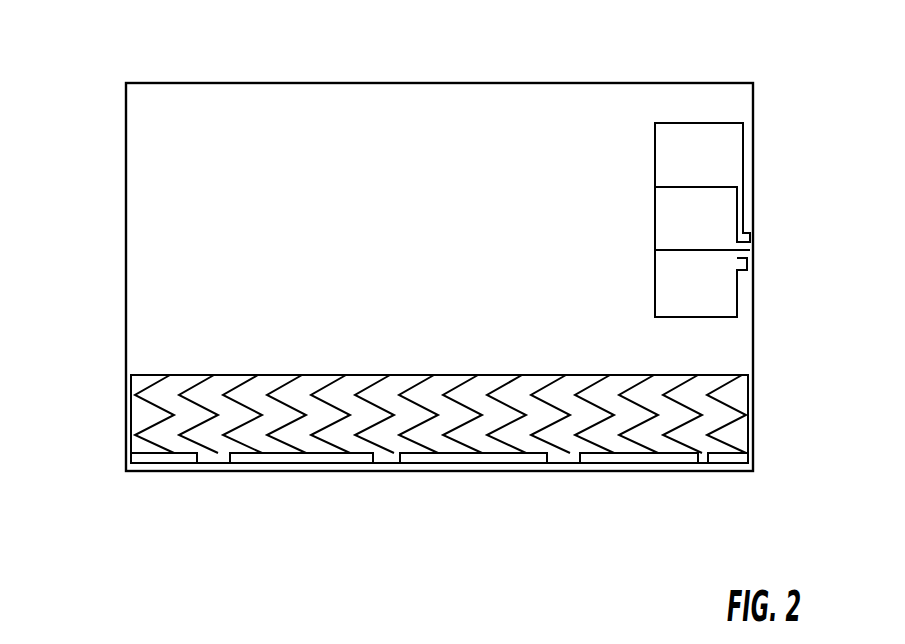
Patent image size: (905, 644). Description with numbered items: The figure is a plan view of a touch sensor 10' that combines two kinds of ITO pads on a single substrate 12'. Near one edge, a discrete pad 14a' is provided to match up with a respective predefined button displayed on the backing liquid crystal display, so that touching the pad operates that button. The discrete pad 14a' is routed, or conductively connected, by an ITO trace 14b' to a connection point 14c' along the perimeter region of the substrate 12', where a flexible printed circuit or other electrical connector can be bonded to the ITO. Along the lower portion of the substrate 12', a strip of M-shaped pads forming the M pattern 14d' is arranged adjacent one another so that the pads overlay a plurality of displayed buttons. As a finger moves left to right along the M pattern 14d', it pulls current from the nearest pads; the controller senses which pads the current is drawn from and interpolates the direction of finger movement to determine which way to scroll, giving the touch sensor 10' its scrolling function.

The touch sensor 10' is at (401, 245).
The substrate 12' is at (399, 277).
The discrete pad 14a' is at (743, 264).
The ITO trace 14b' is at (749, 182).
The connection point 14c' is at (602, 394).
The M pattern pad 14d' is at (439, 464).